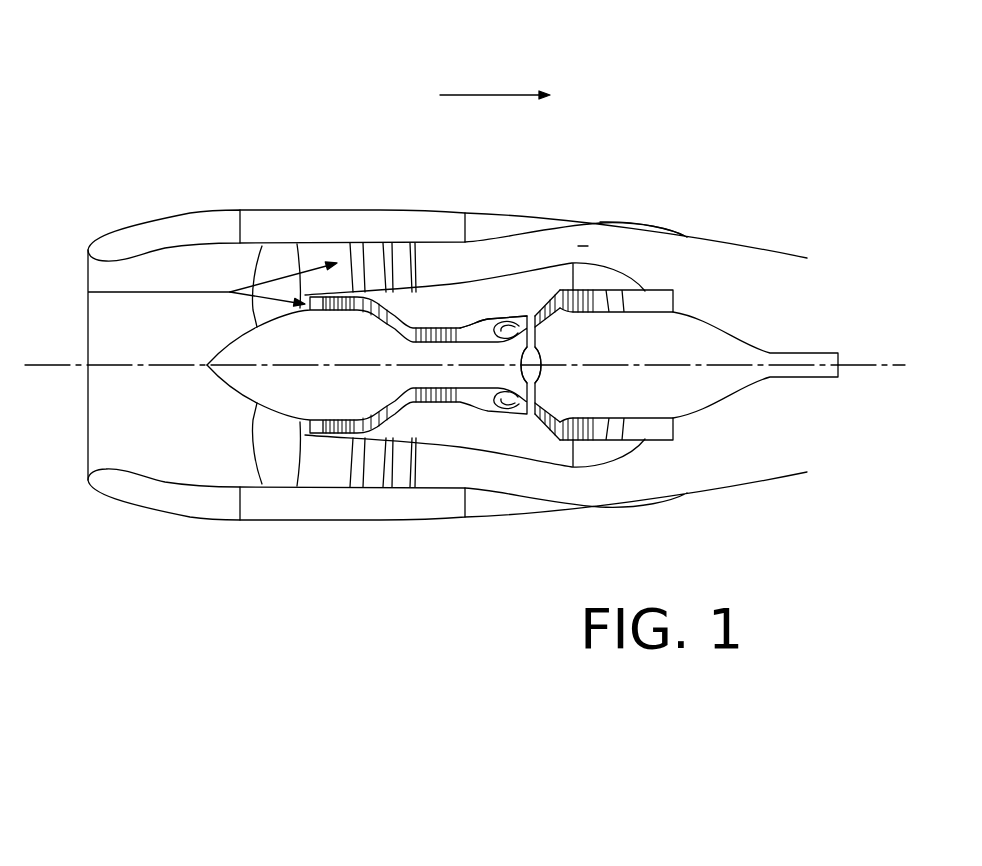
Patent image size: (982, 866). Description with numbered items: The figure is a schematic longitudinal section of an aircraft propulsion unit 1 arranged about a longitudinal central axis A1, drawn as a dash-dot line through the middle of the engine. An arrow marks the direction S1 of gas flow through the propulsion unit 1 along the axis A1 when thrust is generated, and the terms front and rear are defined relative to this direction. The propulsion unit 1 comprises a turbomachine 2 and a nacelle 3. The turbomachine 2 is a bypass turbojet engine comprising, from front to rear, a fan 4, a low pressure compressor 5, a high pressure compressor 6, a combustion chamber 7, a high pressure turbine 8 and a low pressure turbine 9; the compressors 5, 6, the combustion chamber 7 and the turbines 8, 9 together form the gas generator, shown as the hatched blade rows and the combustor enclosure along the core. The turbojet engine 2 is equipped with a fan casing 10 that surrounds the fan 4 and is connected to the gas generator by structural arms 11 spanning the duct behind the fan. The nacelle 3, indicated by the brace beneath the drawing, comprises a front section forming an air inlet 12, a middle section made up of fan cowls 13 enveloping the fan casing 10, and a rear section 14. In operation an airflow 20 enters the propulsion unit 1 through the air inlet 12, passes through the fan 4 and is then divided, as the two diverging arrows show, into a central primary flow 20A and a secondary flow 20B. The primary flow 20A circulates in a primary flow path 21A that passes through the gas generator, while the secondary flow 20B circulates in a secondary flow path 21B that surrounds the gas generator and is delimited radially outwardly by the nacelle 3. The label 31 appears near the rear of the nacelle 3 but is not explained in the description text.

The aircraft propulsion unit 1 is at (172, 128).
The turbomachine 2 is at (700, 300).
The nacelle 3 is at (418, 652).
The fan 4 is at (267, 437).
The low pressure compressor 5 is at (330, 452).
The high pressure compressor 6 is at (439, 414).
The combustion chamber 7 is at (513, 428).
The high pressure turbine 8 is at (570, 444).
The low pressure turbine 9 is at (602, 449).
The fan casing 10 is at (372, 243).
The structural arms 11 is at (418, 263).
The air inlet 12 is at (165, 518).
The fan cowls 13 is at (322, 522).
The rear section 14 is at (504, 514).
The airflow 20 is at (138, 265).
The primary flow 20A is at (247, 315).
The secondary flow 20B is at (300, 243).
The primary flow path 21A is at (481, 331).
The secondary flow path 21B is at (623, 221).
The nozzle inner wall 31 is at (583, 247).
The longitudinal central axis A1 is at (35, 362).
The direction of gas flow S1 is at (494, 95).